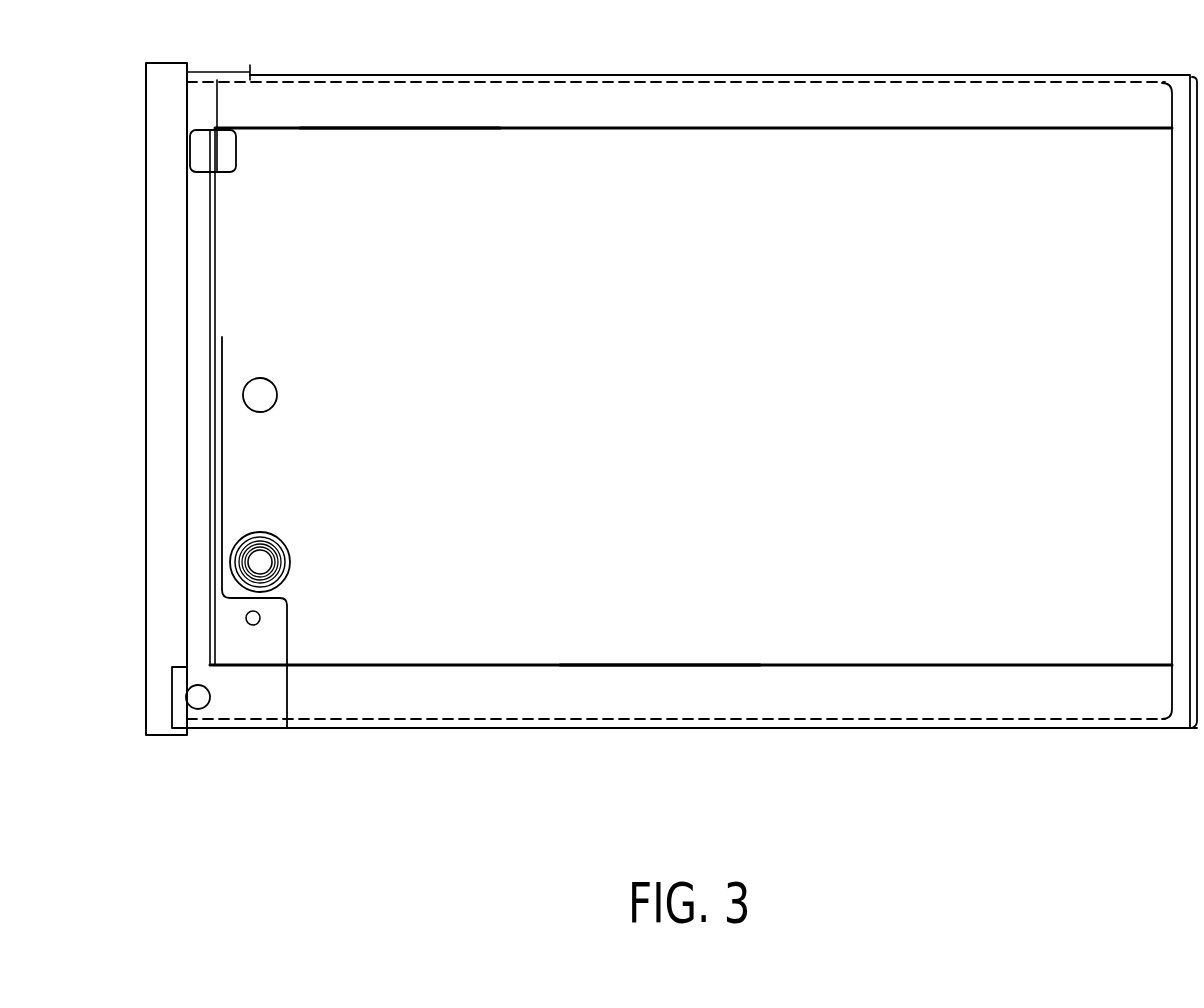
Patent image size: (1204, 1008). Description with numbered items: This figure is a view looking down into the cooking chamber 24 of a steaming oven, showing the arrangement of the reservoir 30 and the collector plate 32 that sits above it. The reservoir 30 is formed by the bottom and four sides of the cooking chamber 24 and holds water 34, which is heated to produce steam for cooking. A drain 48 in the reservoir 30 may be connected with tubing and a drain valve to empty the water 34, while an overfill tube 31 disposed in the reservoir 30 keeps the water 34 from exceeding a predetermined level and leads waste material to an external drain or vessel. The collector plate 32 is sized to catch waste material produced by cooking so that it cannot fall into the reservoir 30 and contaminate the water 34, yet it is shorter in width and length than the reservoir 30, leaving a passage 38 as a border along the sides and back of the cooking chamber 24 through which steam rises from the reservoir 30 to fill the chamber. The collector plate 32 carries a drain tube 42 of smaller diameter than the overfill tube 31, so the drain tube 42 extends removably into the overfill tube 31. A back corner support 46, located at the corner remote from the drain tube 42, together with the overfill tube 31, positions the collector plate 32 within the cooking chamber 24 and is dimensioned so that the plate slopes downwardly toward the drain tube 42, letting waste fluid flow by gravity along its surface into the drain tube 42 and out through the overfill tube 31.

The cooking chamber 24 is at (736, 75).
The reservoir 30 is at (900, 83).
The overfill tube 31 is at (270, 535).
The collector plate 32 is at (668, 420).
The water 34 is at (413, 117).
The passage 38 is at (1020, 110).
The drain tube 42 is at (265, 560).
The back corner support 46 is at (198, 143).
The drain 48 is at (265, 395).